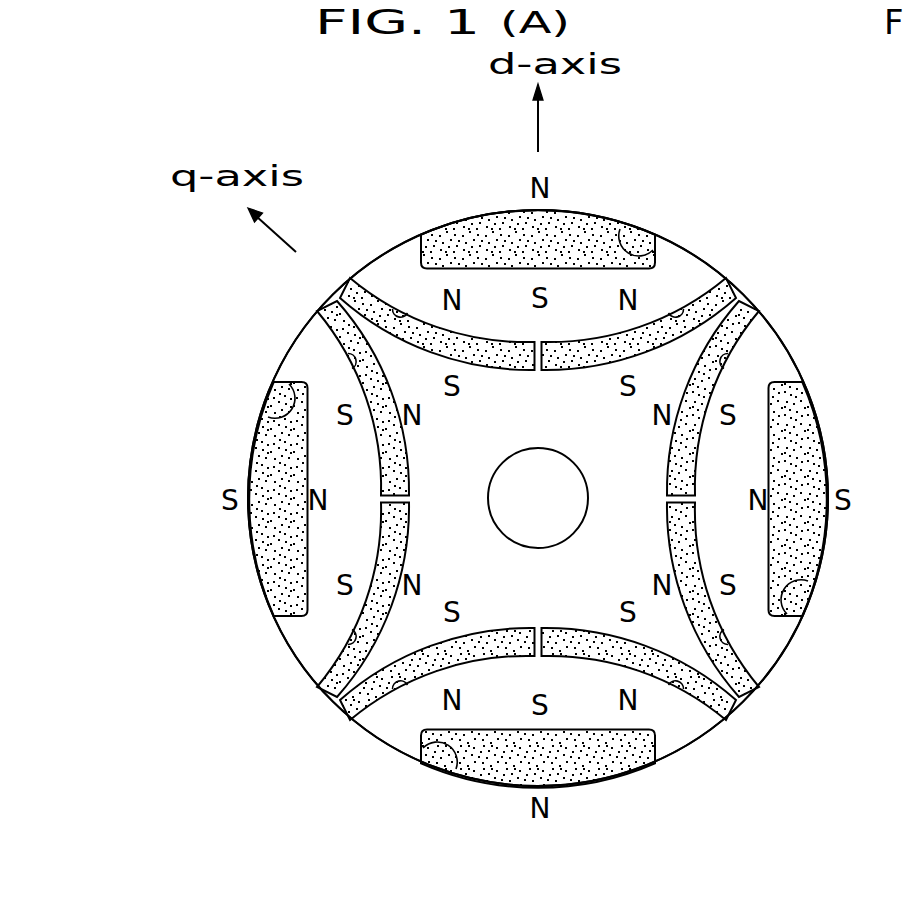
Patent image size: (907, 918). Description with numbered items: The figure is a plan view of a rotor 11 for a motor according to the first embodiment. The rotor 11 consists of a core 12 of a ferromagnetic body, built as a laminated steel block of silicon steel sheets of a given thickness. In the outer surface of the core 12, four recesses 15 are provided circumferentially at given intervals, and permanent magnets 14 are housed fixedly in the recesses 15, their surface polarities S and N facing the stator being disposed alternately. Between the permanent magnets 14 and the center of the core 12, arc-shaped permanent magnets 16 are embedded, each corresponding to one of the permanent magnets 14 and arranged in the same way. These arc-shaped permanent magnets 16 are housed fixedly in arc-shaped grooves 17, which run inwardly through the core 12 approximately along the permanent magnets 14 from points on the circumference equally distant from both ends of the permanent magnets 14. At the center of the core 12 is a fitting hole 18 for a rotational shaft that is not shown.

The rotor 11 is at (745, 257).
The core 12 is at (664, 735).
The permanent magnets 14 is at (498, 236).
The recesses 15 is at (645, 240).
The arc-shaped permanent magnets 16 is at (500, 376).
The arc-shaped grooves 17 is at (398, 302).
The fitting hole 18 is at (558, 513).